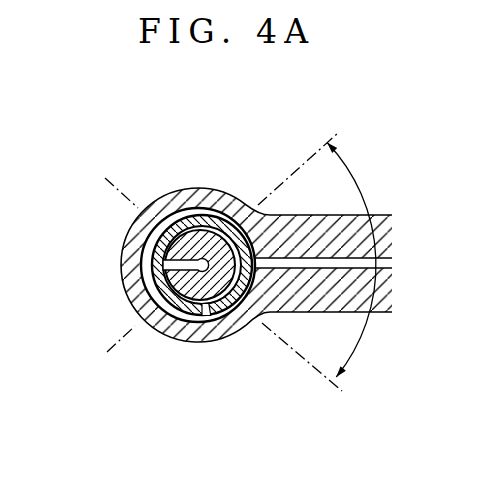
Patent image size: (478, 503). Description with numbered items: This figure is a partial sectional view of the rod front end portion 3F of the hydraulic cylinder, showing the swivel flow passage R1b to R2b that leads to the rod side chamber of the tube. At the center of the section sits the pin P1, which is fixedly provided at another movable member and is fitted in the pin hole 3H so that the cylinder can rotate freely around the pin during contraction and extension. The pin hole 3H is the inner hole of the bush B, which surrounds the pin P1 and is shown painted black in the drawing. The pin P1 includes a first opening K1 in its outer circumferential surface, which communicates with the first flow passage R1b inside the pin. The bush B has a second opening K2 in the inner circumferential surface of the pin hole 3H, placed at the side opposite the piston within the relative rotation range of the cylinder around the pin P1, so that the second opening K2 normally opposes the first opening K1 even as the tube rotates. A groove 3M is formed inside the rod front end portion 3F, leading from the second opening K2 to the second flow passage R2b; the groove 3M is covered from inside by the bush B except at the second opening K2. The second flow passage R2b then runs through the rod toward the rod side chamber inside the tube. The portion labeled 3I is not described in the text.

The rod front end portion 3F is at (122, 286).
The groove 3M is at (172, 214).
The pin hole 3H is at (207, 315).
The bush B is at (187, 318).
The first flow passage R1b is at (203, 258).
The pin P1 is at (206, 242).
The second opening K2 is at (158, 245).
The first opening K1 is at (167, 265).
The second flow passage R2b is at (393, 263).
The arm portion 3I is at (469, 297).